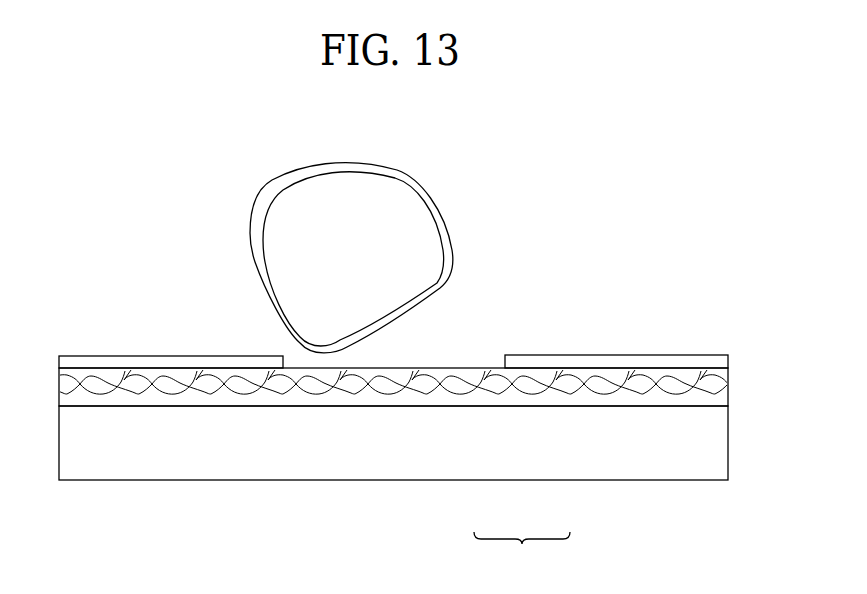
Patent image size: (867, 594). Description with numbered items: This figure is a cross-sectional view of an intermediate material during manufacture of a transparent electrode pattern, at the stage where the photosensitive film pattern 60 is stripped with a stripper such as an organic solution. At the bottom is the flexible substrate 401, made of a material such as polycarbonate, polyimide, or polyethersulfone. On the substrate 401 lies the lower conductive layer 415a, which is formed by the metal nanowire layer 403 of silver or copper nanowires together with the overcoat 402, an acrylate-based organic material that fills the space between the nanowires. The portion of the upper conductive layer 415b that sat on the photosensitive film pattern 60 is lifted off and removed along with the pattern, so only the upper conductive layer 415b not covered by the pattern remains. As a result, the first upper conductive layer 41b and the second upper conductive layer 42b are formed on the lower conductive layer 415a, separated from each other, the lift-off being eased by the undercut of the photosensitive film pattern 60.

The substrate 401 is at (278, 457).
The overcoat 402 is at (494, 390).
The metal nanowire layer 403 is at (551, 390).
The lower conductive layer 415a is at (522, 552).
The upper conductive layer 415b is at (403, 148).
The photosensitive film pattern 60 is at (400, 223).
The first upper conductive layer 41b is at (150, 360).
The second upper conductive layer 42b is at (625, 360).